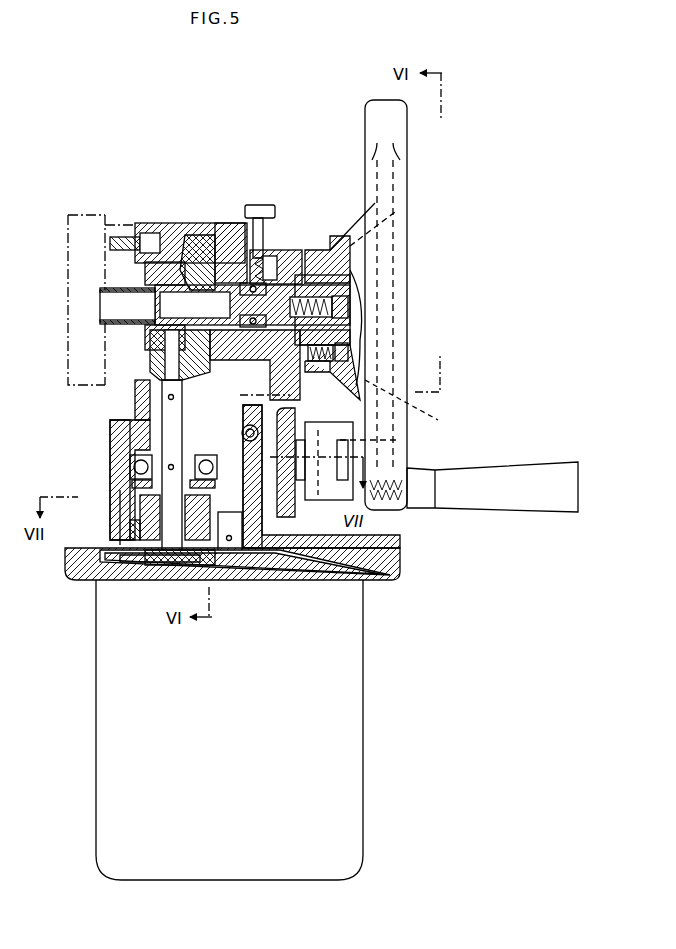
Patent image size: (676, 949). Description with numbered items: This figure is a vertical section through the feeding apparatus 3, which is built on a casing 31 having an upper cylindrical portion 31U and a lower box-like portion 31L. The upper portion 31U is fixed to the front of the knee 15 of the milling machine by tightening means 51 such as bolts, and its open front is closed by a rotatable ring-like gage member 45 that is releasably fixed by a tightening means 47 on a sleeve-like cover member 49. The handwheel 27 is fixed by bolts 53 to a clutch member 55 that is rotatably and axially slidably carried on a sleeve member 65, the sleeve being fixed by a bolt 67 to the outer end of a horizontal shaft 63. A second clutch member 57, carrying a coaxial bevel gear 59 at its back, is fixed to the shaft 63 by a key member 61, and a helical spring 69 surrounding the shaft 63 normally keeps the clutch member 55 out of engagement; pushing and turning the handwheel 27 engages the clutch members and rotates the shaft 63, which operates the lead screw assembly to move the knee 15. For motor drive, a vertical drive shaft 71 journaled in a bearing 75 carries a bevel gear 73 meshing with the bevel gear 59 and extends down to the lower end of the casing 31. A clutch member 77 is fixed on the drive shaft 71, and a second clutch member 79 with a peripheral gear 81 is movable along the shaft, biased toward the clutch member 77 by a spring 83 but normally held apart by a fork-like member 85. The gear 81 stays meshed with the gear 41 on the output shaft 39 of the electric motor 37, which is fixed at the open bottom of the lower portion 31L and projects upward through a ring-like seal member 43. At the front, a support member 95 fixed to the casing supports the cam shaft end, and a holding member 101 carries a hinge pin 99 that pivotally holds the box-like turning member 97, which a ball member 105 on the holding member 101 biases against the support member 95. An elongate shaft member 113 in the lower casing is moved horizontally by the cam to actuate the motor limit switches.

The feeding apparatus 3 is at (150, 155).
The knee 15 is at (75, 215).
The handwheel 27 is at (380, 108).
The casing 31 is at (110, 426).
The upper cylindrical portion 31U is at (140, 224).
The lower box-like portion 31L is at (115, 425).
The electric motor 37 is at (362, 648).
The output shaft 39 is at (230, 562).
The gear 41 is at (262, 512).
The ring-like seal member 43 is at (290, 570).
The ring-like gage member 45 is at (228, 224).
The tightening means 47 is at (260, 208).
The sleeve-like cover member 49 is at (292, 250).
The tightening means 51 is at (165, 240).
The bolts 53 is at (345, 352).
The clutch member 55 is at (320, 248).
The clutch member 57 is at (282, 250).
The bevel gear 59 is at (192, 240).
The key member 61 is at (205, 305).
The shaft 63 is at (150, 275).
The sleeve member 65 is at (352, 280).
The bolt 67 is at (340, 307).
The spring 69 is at (248, 360).
The drive shaft 71 is at (165, 405).
The bevel gear 73 is at (150, 372).
The bearing 75 is at (130, 467).
The clutch member 77 is at (140, 484).
The clutch member 79 is at (145, 500).
The fork-like member 85 is at (132, 527).
The gear 81 is at (120, 560).
The spring 83 is at (150, 565).
The support member 95 is at (313, 500).
The turning member 97 is at (345, 445).
The hinge pin 99 is at (441, 390).
The holding member 101 is at (350, 430).
The ball member 105 is at (380, 470).
The shaft member 113 is at (284, 422).